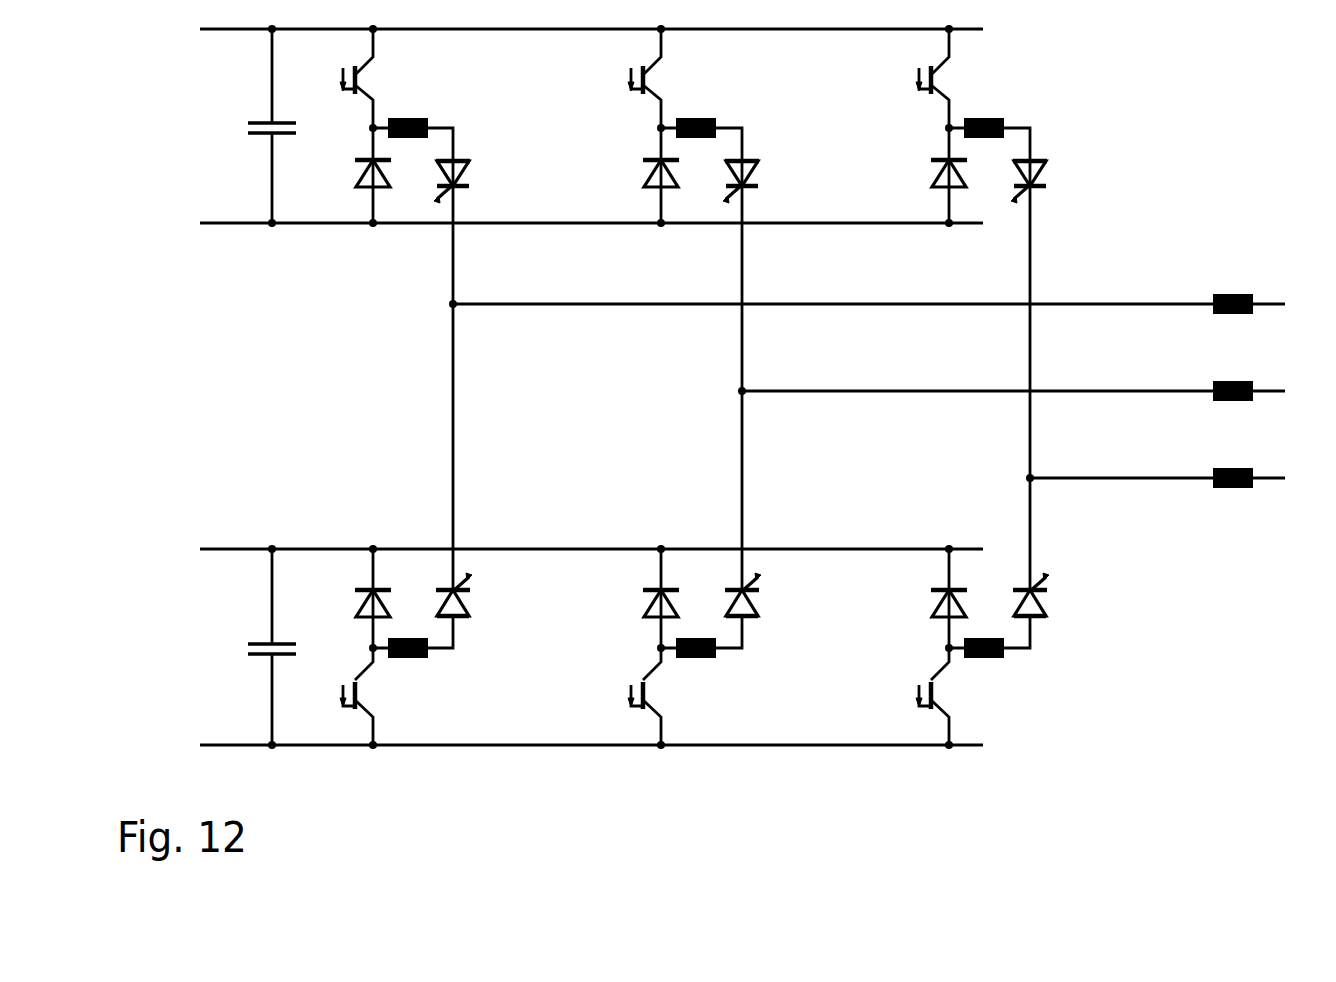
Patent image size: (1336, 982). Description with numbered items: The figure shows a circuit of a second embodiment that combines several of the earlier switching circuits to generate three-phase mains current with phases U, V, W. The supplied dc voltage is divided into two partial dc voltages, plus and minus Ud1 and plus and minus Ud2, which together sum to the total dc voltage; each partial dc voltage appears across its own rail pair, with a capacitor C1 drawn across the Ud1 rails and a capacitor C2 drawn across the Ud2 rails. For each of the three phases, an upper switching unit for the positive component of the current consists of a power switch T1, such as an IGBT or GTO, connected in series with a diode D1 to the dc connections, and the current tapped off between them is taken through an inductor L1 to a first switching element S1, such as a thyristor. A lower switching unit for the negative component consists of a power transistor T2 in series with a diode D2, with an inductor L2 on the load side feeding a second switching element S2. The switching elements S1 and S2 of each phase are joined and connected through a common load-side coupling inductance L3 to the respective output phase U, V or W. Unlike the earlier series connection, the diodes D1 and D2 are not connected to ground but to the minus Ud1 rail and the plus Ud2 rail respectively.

The power switch T1 is at (623, 78).
The power transistor T2 is at (623, 696).
The diode D1 is at (640, 175).
The diode D2 is at (641, 598).
The inductor L1 is at (701, 122).
The inductor L2 is at (701, 659).
The inductance L3 is at (1233, 370).
The first switching element S1 is at (759, 317).
The second switching element S2 is at (761, 463).
The upper DC link capacitor C1 is at (255, 126).
The lower DC link capacitor C2 is at (255, 647).
The partial dc voltage Ud1 is at (555, 126).
The partial dc voltage Ud2 is at (555, 647).
The phase U is at (883, 307).
The phase V is at (1029, 394).
The phase W is at (1176, 481).